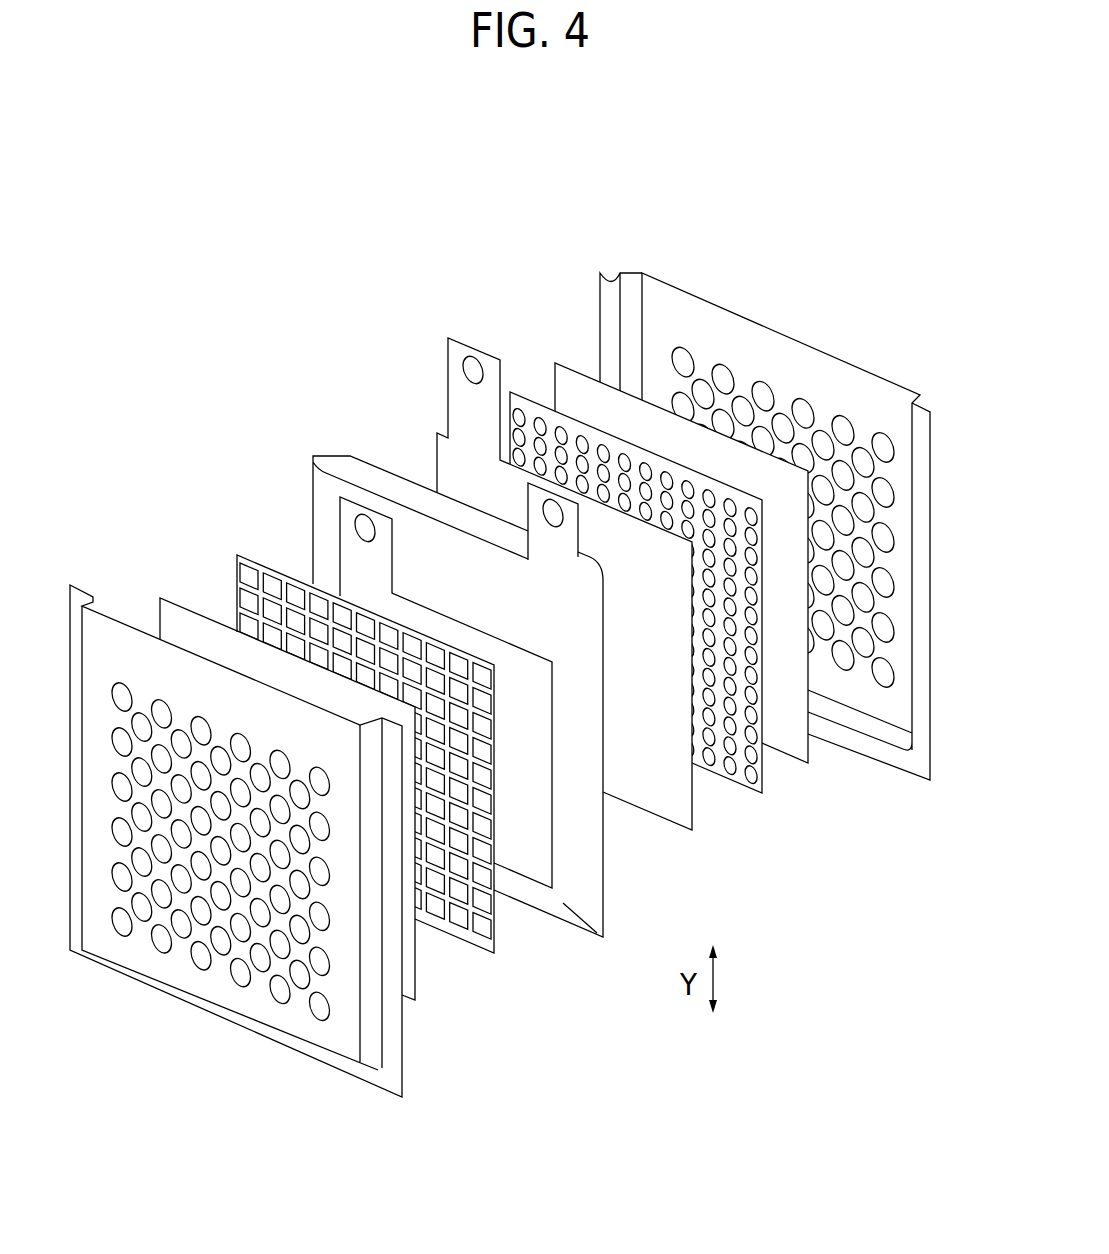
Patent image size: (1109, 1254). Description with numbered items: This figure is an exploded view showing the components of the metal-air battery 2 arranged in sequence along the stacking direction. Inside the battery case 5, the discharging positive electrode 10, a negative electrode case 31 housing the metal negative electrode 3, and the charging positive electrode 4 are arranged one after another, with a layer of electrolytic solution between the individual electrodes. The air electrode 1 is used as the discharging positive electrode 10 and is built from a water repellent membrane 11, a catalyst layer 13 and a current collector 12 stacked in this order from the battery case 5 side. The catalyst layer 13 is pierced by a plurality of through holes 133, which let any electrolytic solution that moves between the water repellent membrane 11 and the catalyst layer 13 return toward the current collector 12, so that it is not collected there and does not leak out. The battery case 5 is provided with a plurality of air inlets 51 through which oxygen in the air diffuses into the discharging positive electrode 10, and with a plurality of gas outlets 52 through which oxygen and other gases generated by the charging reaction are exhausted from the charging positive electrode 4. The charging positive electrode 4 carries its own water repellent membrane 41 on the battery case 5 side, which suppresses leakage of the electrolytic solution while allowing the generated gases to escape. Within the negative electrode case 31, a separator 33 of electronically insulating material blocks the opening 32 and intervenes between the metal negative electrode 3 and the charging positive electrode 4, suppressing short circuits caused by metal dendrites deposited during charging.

The air electrode 1 is at (601, 540).
The metal-air battery 2 is at (605, 262).
The metal negative electrode 3 is at (469, 697).
The charging positive electrode 4 is at (236, 554).
The battery case 5 is at (527, 685).
The discharging positive electrode 10 is at (601, 540).
The water repellent membrane 11 is at (570, 378).
The current collector 12 is at (433, 442).
The catalyst layer 13 is at (636, 566).
The negative electrode case 31 is at (334, 460).
The opening 32 is at (552, 815).
The separator 33 is at (518, 858).
The water repellent membrane 41 is at (190, 627).
The air inlets 51 is at (888, 580).
The gas outlets 52 is at (140, 912).
The through holes 133 is at (756, 698).